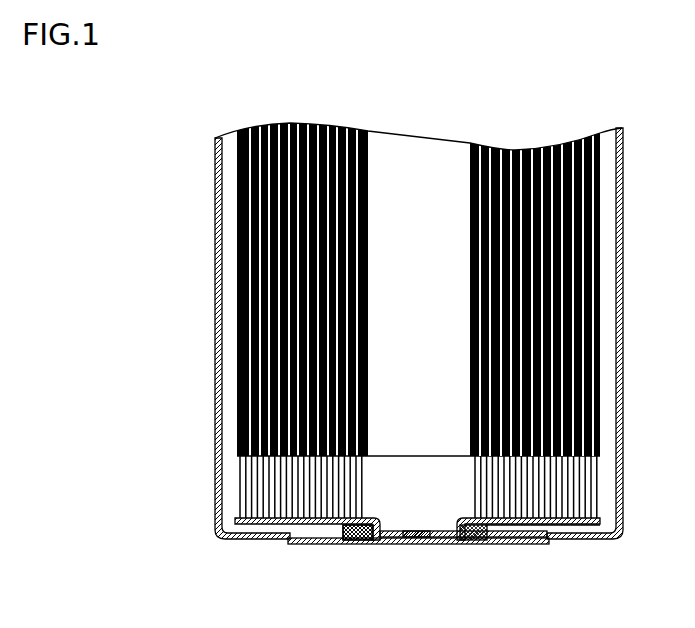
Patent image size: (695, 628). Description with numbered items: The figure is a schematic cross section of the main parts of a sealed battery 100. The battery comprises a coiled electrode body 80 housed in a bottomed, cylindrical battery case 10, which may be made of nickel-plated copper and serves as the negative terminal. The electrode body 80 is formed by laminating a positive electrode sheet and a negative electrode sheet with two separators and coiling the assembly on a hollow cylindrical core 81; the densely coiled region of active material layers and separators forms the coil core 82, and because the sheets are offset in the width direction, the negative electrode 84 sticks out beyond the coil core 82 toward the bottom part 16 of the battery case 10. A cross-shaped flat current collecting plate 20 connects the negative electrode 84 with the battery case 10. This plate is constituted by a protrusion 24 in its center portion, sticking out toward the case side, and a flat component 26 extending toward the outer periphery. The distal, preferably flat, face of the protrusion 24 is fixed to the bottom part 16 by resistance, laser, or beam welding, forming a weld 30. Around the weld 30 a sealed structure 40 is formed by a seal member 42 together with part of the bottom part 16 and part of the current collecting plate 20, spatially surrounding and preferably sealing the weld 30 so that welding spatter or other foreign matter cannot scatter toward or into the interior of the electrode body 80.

The sealed battery 100 is at (195, 178).
The battery case 10 is at (624, 214).
The bottom part of the battery case 16 is at (530, 546).
The current collecting plate 20 is at (580, 526).
The protrusion 24 is at (434, 529).
The flat component 26 is at (336, 518).
The weld 30 is at (415, 546).
The sealed structure 40 is at (380, 545).
The seal member 42 is at (342, 537).
The electrode body 80 is at (229, 323).
The core 81 is at (469, 173).
The coil core 82 is at (602, 285).
The negative electrode 84 is at (597, 478).